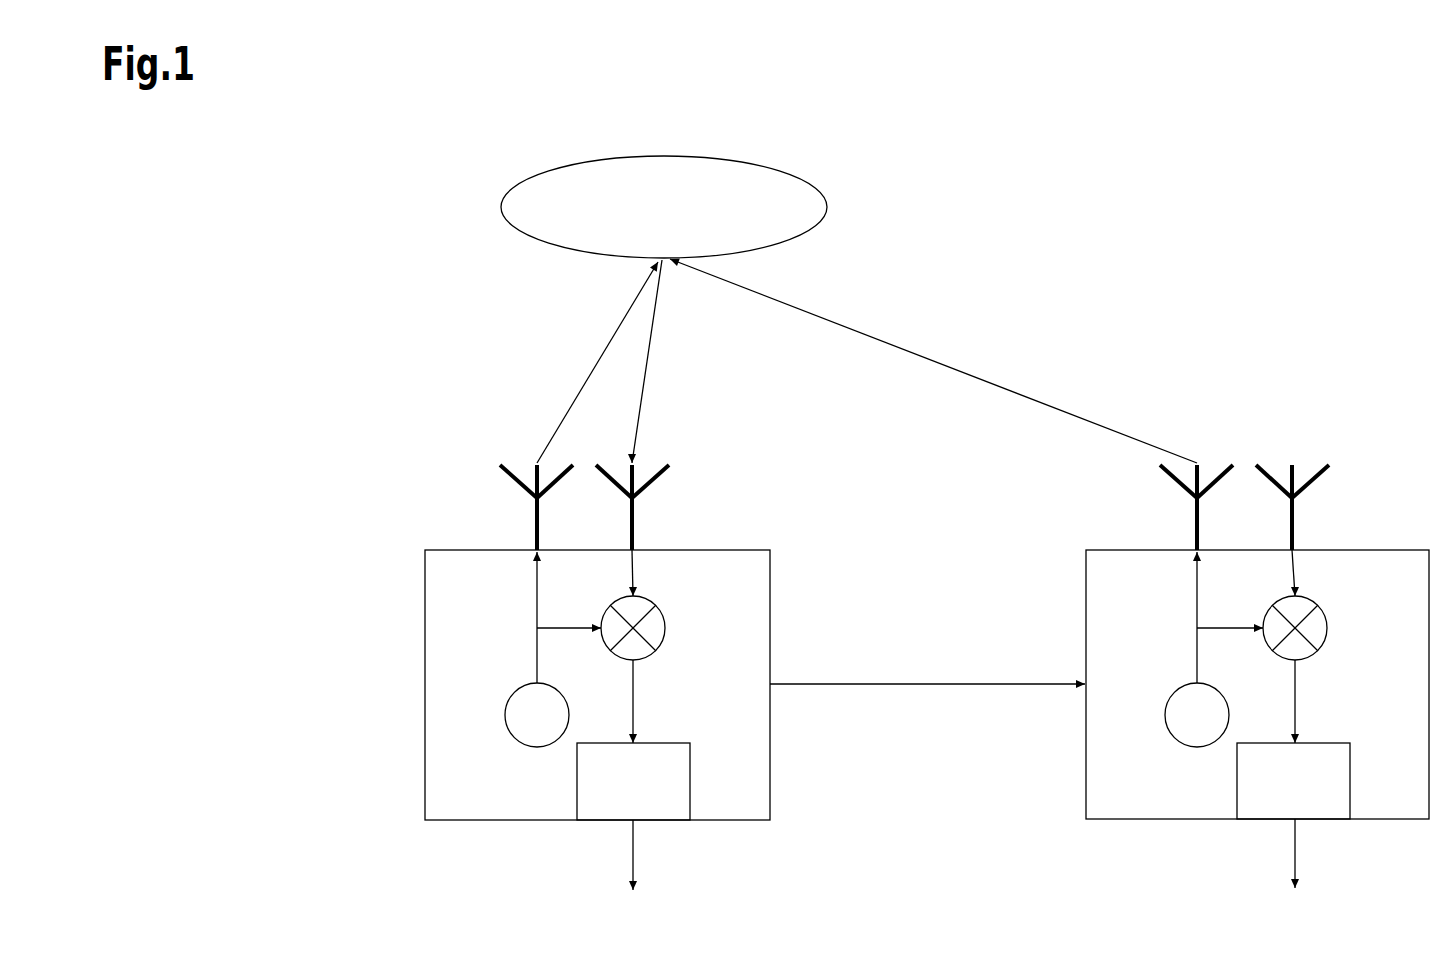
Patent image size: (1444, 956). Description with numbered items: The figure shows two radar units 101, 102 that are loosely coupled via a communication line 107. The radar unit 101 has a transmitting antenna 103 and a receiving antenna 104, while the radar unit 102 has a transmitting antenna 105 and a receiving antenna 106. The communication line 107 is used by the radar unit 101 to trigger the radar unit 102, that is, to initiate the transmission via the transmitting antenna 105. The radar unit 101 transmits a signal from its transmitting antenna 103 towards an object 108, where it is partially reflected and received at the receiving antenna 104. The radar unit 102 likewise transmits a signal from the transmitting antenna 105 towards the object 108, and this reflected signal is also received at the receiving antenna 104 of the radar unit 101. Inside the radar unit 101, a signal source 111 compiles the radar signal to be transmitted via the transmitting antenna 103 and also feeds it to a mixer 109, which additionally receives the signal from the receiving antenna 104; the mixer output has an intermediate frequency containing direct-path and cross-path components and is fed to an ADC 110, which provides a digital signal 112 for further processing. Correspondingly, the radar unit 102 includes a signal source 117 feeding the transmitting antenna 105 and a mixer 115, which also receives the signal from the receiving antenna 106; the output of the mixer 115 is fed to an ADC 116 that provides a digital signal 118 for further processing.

The radar unit 101 is at (480, 822).
The radar unit 102 is at (1140, 822).
The transmitting antenna 103 is at (536, 470).
The receiving antenna 104 is at (636, 470).
The transmitting antenna 105 is at (1195, 471).
The receiving antenna 106 is at (1296, 470).
The communication line 107 is at (913, 686).
The object 108 is at (502, 207).
The mixer 109 is at (667, 630).
The ADC 110 is at (576, 806).
The signal source 111 is at (516, 694).
The digital signal 112 is at (631, 846).
The mixer 115 is at (1329, 630).
The ADC 116 is at (1236, 806).
The signal source 117 is at (1176, 694).
The digital signal 118 is at (1293, 846).